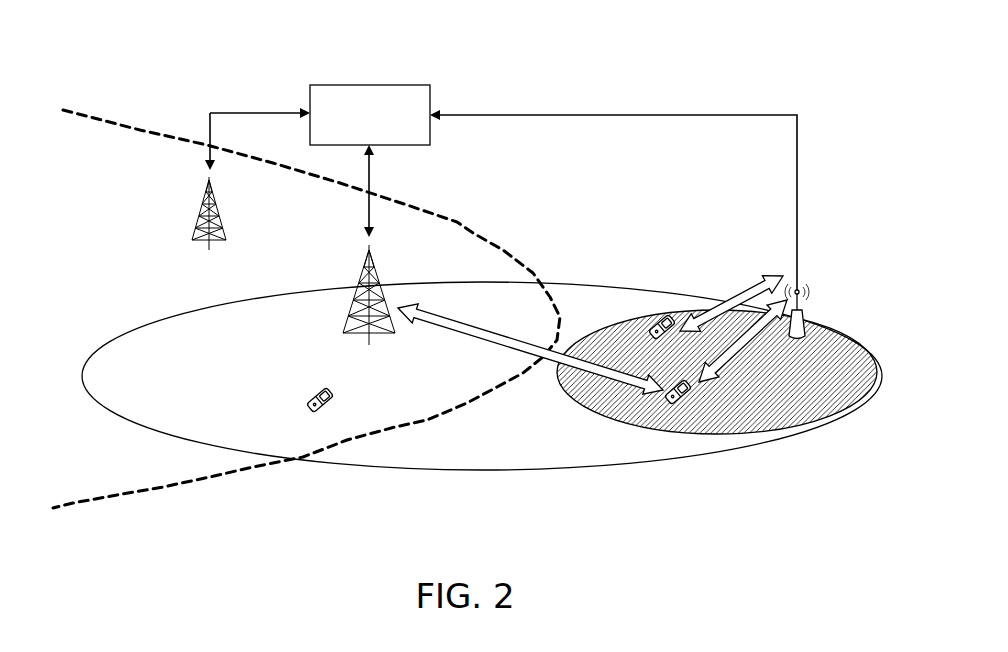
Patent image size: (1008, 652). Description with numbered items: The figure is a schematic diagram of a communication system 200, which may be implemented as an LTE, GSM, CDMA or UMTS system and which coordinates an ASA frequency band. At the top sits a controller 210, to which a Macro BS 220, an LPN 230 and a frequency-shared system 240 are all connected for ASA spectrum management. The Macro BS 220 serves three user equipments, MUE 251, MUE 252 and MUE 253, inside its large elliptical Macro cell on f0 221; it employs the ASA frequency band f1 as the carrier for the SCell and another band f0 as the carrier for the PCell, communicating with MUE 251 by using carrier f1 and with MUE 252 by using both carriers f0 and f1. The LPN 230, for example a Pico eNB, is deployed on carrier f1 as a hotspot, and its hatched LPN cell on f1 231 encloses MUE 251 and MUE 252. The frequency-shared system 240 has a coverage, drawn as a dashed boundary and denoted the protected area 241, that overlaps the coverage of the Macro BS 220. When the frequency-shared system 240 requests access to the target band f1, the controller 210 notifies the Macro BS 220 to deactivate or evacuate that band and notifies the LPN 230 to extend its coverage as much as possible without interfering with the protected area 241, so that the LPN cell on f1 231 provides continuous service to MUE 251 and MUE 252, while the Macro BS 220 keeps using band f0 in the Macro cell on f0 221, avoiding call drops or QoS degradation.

The communication system 200 is at (528, 71).
The controller 210 is at (501, 187).
The Macro BS 220 is at (368, 308).
The Macro cell on f0 221 is at (487, 510).
The LPN 230 is at (797, 321).
The LPN cell on f1 231 is at (793, 473).
The frequency-shared system 240 is at (207, 227).
The protected area 241 is at (211, 525).
The MUE 251 is at (661, 340).
The MUE 252 is at (677, 405).
The MUE 253 is at (318, 414).